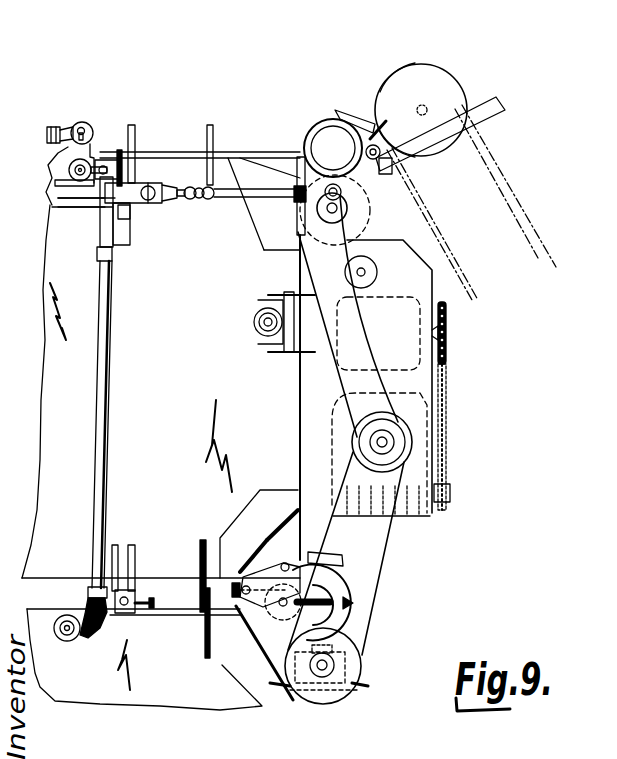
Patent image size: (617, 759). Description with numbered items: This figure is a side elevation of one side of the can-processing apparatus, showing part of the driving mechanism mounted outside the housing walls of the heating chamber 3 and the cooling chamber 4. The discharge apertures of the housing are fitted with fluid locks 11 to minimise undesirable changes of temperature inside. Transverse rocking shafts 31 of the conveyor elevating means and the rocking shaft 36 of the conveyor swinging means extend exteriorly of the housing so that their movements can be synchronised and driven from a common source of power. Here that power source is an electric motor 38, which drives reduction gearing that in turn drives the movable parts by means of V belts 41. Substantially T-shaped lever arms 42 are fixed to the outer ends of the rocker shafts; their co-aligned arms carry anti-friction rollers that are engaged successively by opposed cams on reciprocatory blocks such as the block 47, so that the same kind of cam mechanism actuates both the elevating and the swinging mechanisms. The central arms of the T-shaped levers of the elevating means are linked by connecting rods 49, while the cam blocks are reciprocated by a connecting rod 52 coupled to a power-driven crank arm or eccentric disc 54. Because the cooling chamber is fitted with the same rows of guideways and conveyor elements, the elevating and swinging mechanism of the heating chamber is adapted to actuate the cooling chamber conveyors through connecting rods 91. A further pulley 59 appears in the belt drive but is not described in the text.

The heating chamber 3 is at (161, 410).
The cooling chamber 4 is at (144, 659).
The fluid lock 11 is at (392, 634).
The rocking shaft 31 is at (88, 160).
The rocking shaft 36 is at (258, 322).
The electric motor 38 is at (446, 360).
The V belt 41 is at (345, 393).
The T-shaped lever arm 42 is at (54, 165).
The reciprocatory block 47 is at (69, 206).
The connecting rod 49 is at (50, 128).
The connecting rod 52 is at (222, 199).
The eccentric disc 54 is at (342, 205).
The pulley 59 is at (415, 469).
The connecting rod 91 is at (106, 446).